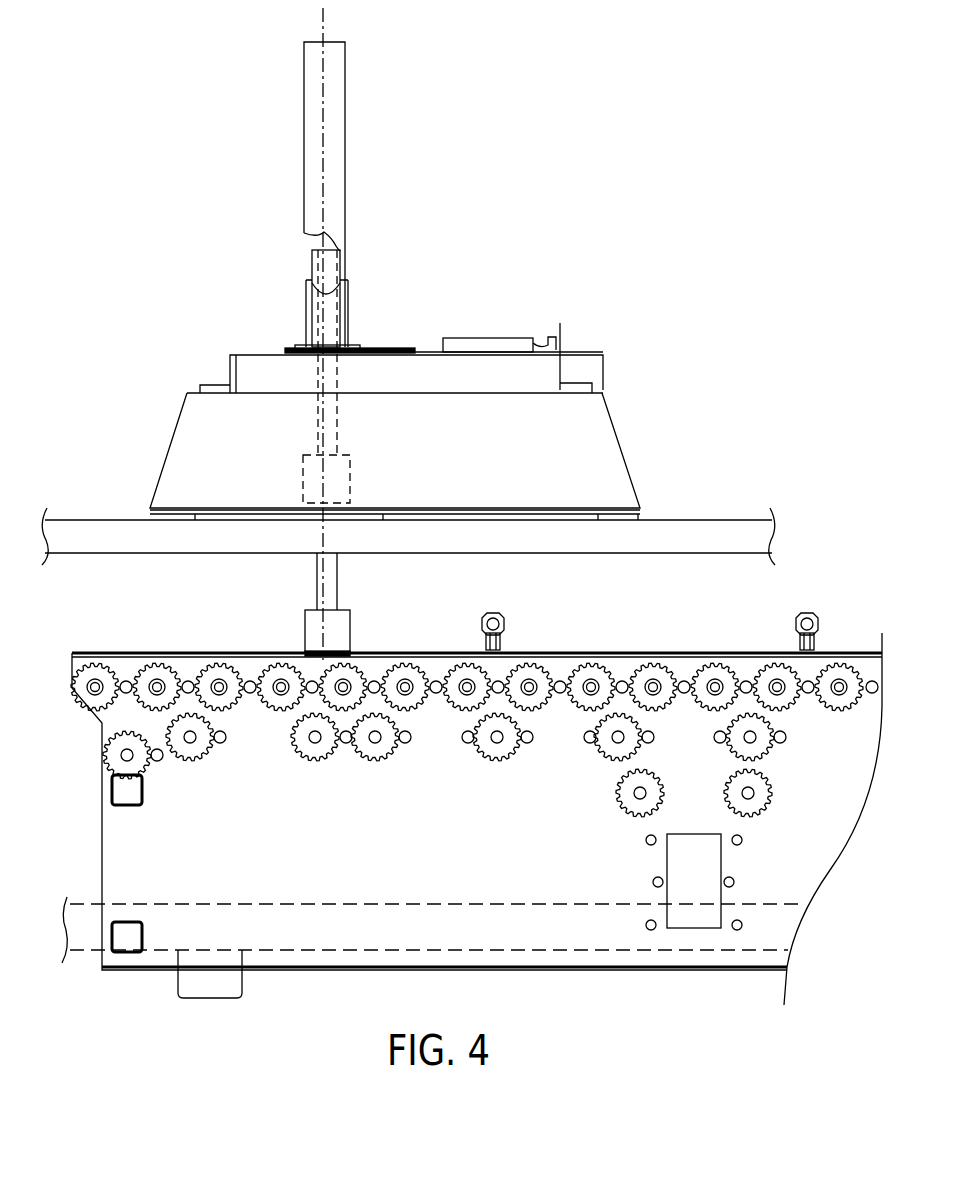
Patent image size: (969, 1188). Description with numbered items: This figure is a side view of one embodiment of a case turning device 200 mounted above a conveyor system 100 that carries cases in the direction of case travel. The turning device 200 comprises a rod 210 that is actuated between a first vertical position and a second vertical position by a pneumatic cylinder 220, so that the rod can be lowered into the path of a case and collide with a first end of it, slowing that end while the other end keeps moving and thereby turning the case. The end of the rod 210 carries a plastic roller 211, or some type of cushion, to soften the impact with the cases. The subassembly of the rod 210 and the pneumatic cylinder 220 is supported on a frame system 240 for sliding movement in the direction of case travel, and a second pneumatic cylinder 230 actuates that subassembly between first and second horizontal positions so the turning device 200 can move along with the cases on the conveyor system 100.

The conveyor system 100 is at (193, 632).
The turning device 200 is at (369, 197).
The rod 210 is at (338, 560).
The plastic roller 211 is at (350, 617).
The pneumatic cylinder 220 is at (346, 187).
The pneumatic cylinder 230 is at (480, 338).
The frame system 240 is at (620, 432).